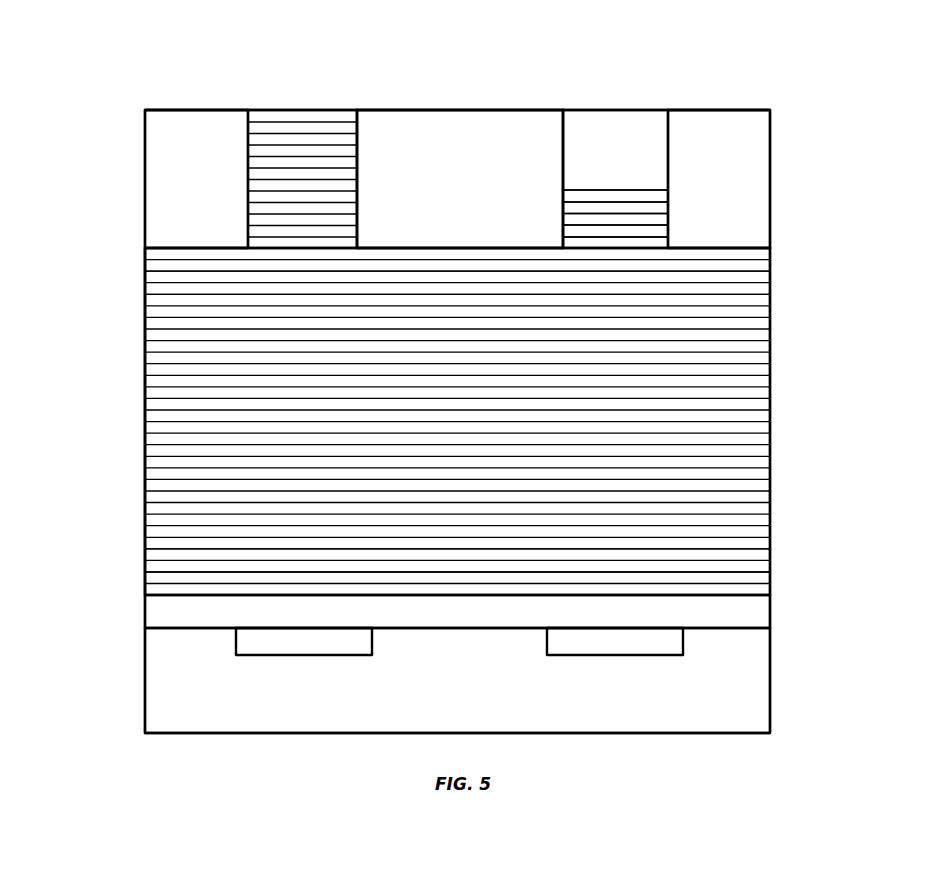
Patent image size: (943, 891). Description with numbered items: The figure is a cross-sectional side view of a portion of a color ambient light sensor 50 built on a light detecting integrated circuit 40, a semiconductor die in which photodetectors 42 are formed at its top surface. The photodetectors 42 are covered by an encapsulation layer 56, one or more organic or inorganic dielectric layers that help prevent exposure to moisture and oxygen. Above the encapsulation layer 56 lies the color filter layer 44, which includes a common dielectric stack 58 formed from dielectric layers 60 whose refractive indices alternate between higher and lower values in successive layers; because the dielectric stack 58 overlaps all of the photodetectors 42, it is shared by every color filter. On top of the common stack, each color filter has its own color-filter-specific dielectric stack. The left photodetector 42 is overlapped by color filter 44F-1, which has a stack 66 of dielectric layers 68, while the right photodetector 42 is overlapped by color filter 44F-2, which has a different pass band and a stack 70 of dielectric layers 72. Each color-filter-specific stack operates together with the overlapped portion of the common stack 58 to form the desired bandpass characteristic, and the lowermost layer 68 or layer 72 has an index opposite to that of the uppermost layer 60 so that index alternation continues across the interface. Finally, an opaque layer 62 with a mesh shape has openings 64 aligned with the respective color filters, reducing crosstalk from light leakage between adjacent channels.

The light detecting integrated circuit 40 is at (150, 688).
The photodetectors 42 is at (370, 640).
The color filter layer 44 is at (60, 248).
The color filter 44F-1 is at (241, 38).
The color filter 44F-2 is at (686, 53).
The ambient light sensor 50 is at (798, 68).
The encapsulation layer 56 is at (770, 611).
The dielectric stack 58 is at (792, 248).
The dielectric layers 60 is at (156, 301).
The opaque layer 62 is at (197, 121).
The openings 64 is at (357, 100).
The color-filter-specific dielectric stack 66 is at (364, 114).
The dielectric layers 68 is at (260, 199).
The color-filter-specific dielectric stack 70 is at (676, 186).
The dielectric layers 72 is at (636, 196).